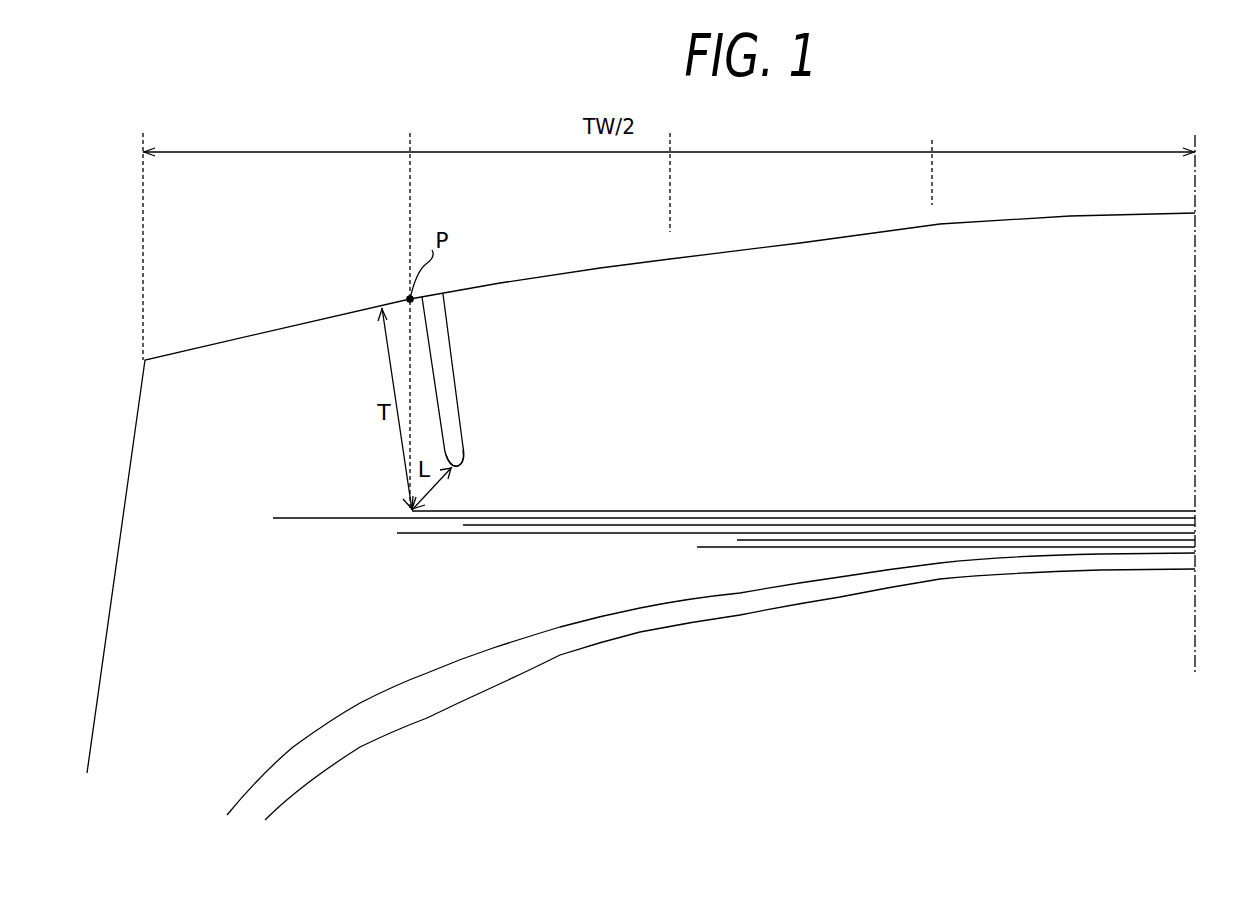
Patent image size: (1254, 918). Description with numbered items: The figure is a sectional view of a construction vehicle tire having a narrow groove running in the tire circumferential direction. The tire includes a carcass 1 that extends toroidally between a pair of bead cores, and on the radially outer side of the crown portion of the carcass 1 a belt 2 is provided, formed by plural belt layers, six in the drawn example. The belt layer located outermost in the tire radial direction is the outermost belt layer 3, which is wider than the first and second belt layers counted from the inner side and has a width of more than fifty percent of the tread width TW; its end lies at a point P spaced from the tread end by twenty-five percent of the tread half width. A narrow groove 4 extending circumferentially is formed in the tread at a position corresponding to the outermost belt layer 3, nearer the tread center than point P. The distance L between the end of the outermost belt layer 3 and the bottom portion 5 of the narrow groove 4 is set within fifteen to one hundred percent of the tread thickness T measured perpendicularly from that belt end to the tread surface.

The carcass 1 is at (488, 650).
The belt 2 is at (1208, 505).
The outermost belt layer 3 is at (485, 511).
The narrow groove 4 is at (445, 363).
The bottom portion 5 is at (458, 467).